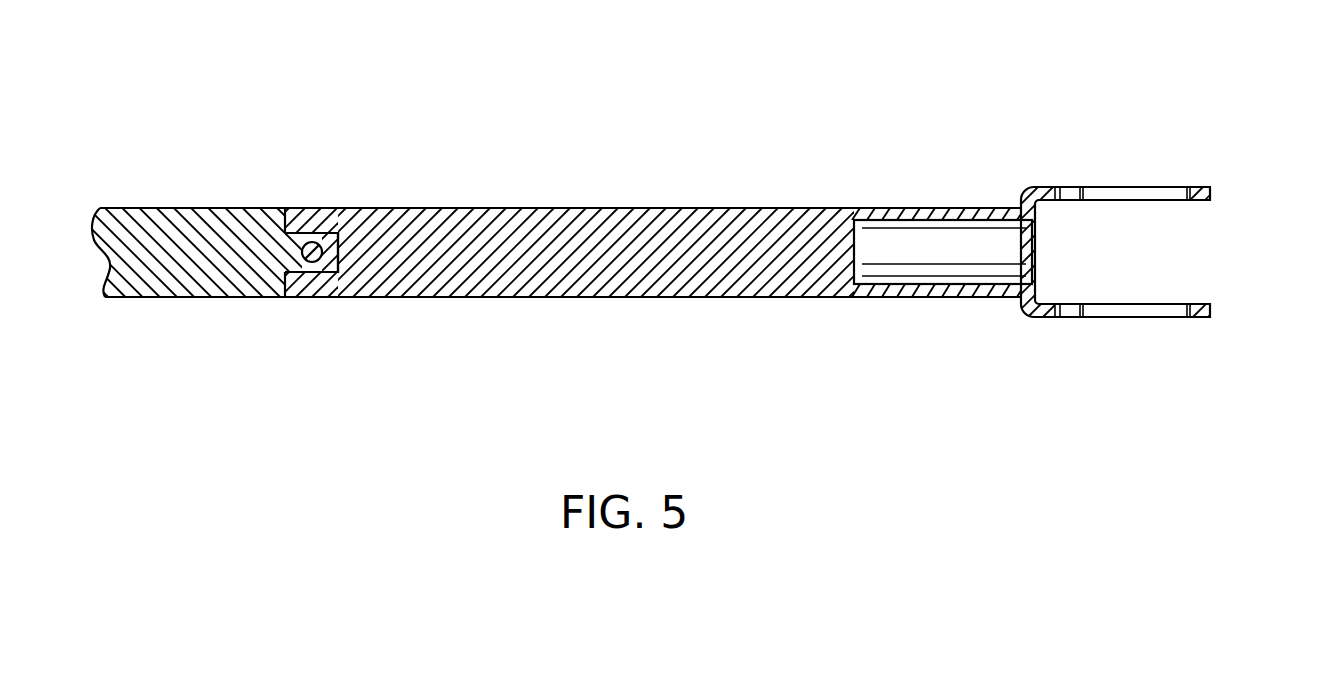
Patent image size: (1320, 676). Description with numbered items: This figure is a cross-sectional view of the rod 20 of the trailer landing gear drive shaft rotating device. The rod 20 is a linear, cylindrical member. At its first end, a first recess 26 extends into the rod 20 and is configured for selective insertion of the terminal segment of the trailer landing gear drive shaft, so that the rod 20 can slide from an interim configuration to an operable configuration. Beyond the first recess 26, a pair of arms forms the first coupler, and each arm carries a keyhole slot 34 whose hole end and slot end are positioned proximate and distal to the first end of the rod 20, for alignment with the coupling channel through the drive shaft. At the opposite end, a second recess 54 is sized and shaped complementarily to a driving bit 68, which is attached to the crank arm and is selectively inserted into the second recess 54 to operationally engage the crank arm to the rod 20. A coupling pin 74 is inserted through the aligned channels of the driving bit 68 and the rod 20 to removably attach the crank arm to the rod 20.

The rod 20 is at (597, 208).
The first recess 26 is at (919, 252).
The keyhole slot 34 is at (1140, 193).
The second recess 54 is at (338, 232).
The driving bit 68 is at (338, 267).
The coupling pin 74 is at (303, 255).